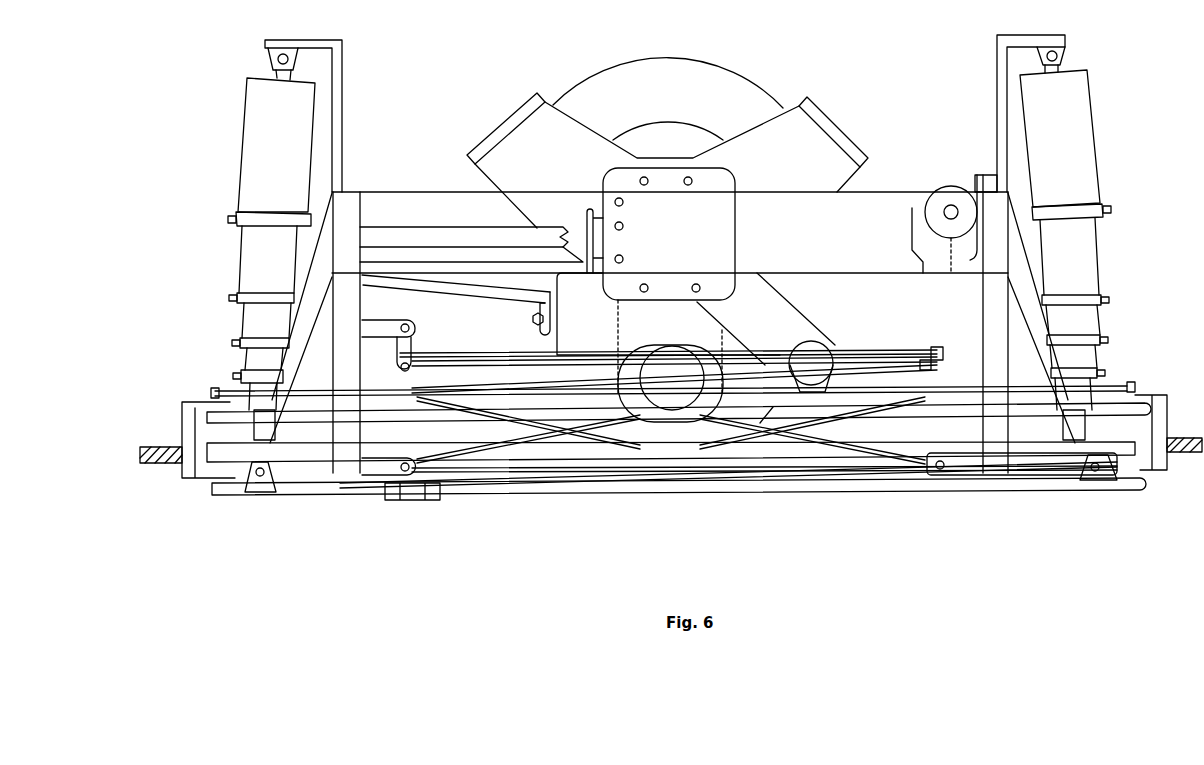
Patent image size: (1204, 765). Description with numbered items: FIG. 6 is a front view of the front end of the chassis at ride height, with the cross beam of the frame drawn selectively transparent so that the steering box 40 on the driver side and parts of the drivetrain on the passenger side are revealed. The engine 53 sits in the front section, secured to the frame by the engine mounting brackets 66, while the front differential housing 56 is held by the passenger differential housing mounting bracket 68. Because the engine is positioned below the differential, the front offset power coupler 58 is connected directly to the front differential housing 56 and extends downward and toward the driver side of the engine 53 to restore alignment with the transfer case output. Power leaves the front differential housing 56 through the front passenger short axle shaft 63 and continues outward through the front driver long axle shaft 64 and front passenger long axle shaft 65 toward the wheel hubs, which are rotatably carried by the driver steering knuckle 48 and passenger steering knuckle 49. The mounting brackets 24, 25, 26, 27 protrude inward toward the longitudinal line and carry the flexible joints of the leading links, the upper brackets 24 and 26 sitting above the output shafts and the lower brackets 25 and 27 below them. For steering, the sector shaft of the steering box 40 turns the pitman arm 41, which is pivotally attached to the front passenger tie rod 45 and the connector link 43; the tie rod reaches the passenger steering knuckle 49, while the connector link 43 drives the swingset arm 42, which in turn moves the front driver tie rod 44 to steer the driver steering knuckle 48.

The mounting bracket 24 is at (445, 395).
The mounting bracket 25 is at (385, 465).
The mounting bracket 26 is at (918, 385).
The mounting bracket 27 is at (960, 460).
The steering box 40 is at (940, 195).
The pitman arm 41 is at (945, 365).
The swingset arm 42 is at (405, 350).
The connector link 43 is at (866, 347).
The front driver tie rod 44 is at (1113, 383).
The front passenger tie rod 45 is at (240, 392).
The driver steering knuckle 48 is at (1163, 457).
The passenger steering knuckle 49 is at (192, 470).
The engine 53 is at (757, 98).
The front differential housing 56 is at (667, 183).
The front offset power coupler 58 is at (797, 325).
The front passenger short axle shaft 63 is at (480, 237).
The front driver long axle shaft 64 is at (1020, 445).
The front passenger long axle shaft 65 is at (322, 450).
The engine mounting bracket 66 is at (487, 292).
The passenger differential housing mounting bracket 68 is at (445, 233).